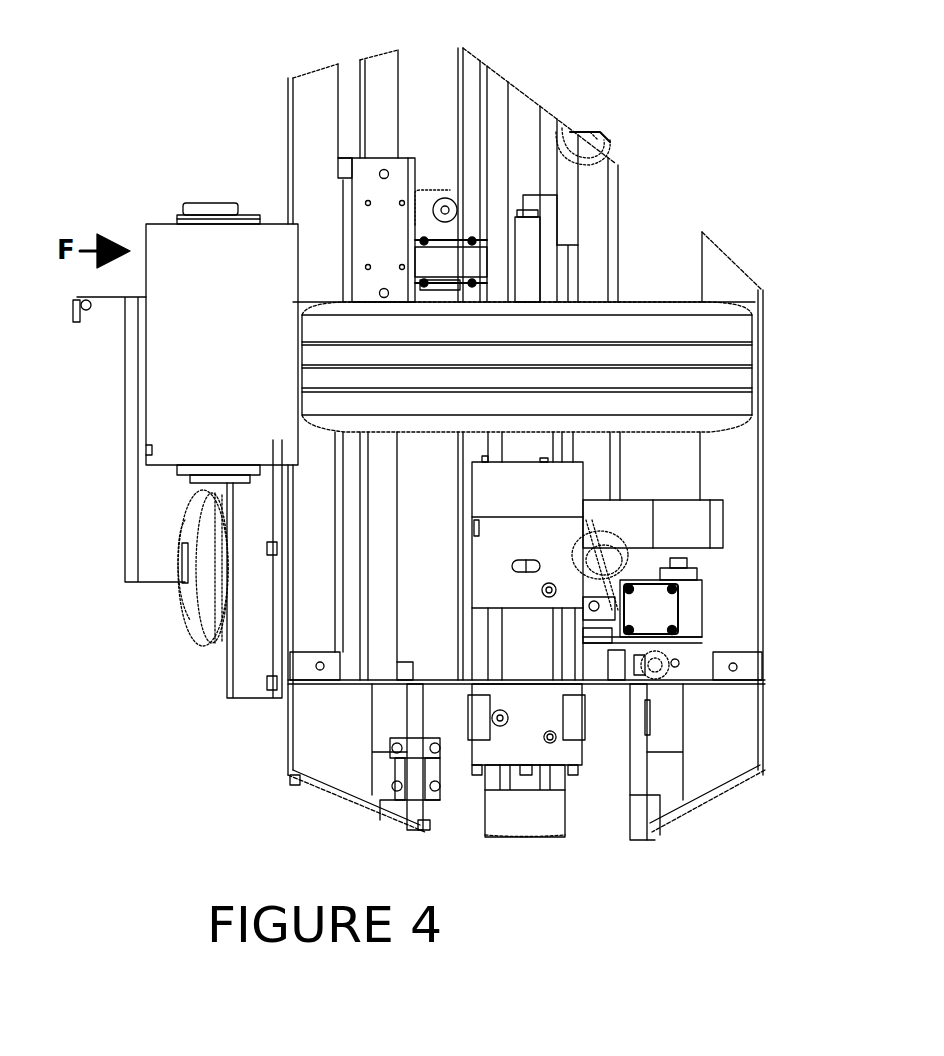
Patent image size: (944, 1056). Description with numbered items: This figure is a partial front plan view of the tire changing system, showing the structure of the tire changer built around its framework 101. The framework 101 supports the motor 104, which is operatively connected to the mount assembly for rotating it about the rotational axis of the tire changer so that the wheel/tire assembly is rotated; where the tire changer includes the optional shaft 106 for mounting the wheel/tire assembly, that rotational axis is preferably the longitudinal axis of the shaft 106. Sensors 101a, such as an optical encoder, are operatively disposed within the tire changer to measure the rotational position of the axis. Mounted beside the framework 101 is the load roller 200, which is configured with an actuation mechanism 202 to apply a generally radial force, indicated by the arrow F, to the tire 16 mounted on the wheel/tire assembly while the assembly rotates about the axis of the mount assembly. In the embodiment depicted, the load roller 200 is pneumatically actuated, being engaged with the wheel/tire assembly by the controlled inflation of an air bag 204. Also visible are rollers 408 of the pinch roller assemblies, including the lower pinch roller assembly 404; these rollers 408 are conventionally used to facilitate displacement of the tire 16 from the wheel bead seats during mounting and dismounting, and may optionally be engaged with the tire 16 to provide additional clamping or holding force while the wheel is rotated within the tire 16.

The framework 101 is at (318, 127).
The sensors 101a is at (480, 530).
The load roller 200 is at (237, 268).
The actuation mechanism 202 is at (150, 608).
The air bag 204 is at (213, 613).
The tire 16 is at (683, 330).
The rollers 408 is at (588, 160).
The shaft 106 is at (527, 267).
The lower pinch roller assembly 404 is at (690, 613).
The motor 104 is at (567, 748).